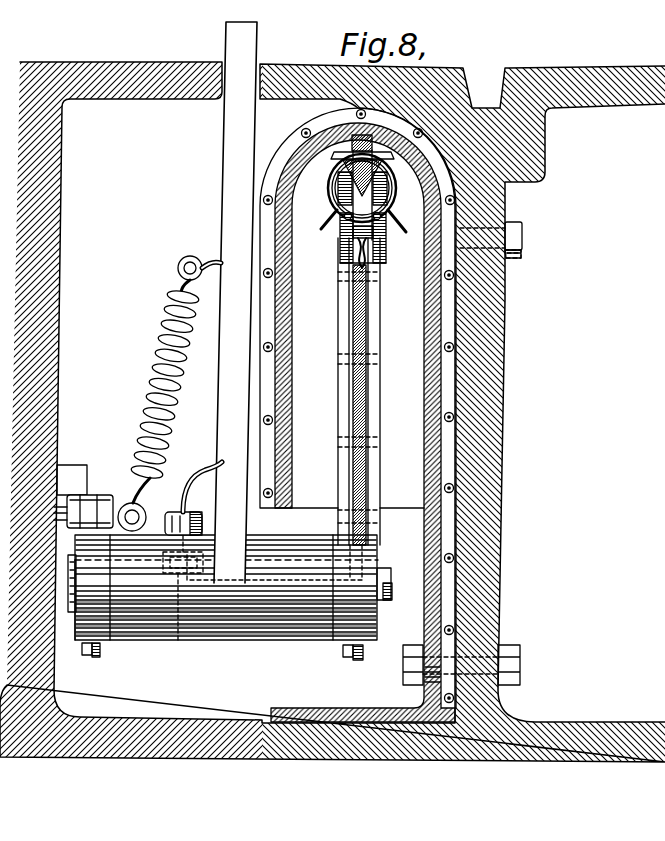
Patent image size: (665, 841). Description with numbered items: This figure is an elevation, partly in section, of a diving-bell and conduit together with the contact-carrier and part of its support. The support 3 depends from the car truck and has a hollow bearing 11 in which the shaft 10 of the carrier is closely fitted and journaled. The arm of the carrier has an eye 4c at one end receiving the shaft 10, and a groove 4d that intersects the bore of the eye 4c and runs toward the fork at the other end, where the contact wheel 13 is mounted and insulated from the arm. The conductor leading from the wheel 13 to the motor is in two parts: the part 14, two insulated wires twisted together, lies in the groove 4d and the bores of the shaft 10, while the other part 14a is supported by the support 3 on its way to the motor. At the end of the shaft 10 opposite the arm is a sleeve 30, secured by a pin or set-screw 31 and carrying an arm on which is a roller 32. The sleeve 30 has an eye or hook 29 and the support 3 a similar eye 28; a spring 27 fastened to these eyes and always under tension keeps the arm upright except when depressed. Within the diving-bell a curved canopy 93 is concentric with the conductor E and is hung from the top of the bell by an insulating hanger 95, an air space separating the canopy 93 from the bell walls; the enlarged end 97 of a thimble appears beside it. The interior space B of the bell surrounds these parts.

The support 3 is at (225, 137).
The eye 4c is at (368, 634).
The groove 4d is at (338, 327).
The shaft 10 is at (384, 606).
The hollow bearing 11 is at (272, 628).
The wheel 13 is at (348, 226).
The conductor 14 is at (357, 472).
The conductor 14a is at (200, 482).
The spring 27 is at (160, 350).
The eye 28 is at (177, 265).
The eye or hook 29 is at (129, 503).
The sleeve or eye 30 is at (77, 632).
The pin or set-screw 31 is at (92, 658).
The roller 32 is at (94, 495).
The canopy 93 is at (393, 180).
The hanger 95 is at (352, 158).
The enlarged end 97 is at (337, 193).
The chamber B is at (358, 357).
The conductor E is at (361, 199).